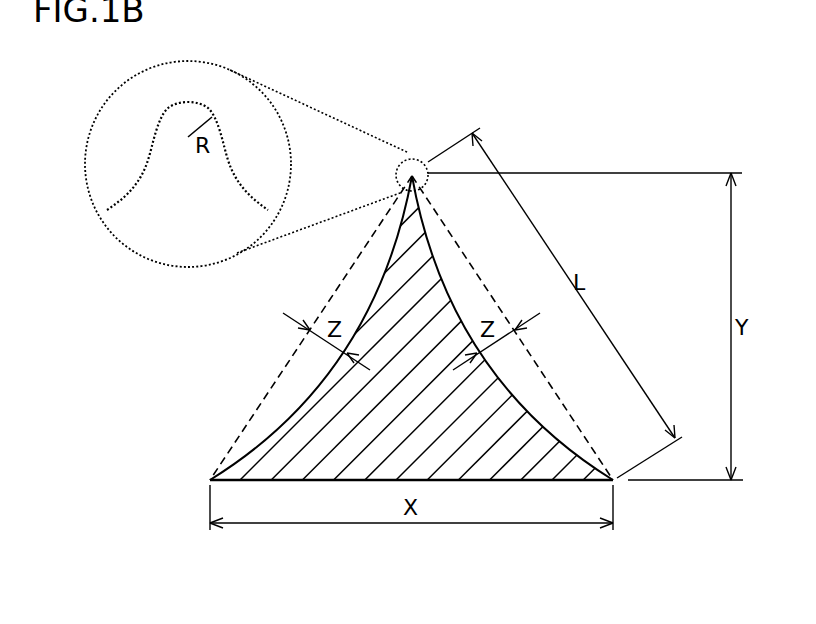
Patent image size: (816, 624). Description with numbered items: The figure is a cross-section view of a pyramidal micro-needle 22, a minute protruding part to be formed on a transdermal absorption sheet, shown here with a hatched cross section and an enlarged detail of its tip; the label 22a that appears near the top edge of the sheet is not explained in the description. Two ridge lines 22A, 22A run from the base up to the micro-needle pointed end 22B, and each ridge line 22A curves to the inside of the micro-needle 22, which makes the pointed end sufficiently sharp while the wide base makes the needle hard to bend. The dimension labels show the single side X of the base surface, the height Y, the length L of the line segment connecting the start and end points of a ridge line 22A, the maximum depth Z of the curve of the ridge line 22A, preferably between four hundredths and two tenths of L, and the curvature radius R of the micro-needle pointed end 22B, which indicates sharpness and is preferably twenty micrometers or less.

The micro-needle 22 is at (512, 155).
The ridge line 22A is at (308, 403).
The micro-needle pointed end 22B is at (188, 108).
The tooth 22a is at (565, 5).